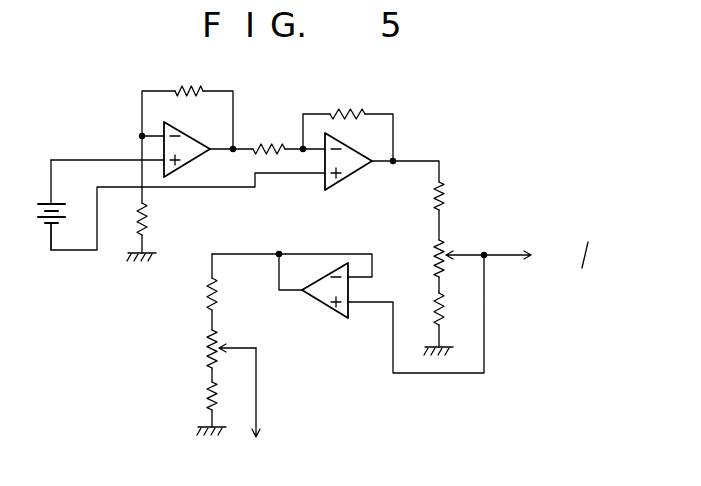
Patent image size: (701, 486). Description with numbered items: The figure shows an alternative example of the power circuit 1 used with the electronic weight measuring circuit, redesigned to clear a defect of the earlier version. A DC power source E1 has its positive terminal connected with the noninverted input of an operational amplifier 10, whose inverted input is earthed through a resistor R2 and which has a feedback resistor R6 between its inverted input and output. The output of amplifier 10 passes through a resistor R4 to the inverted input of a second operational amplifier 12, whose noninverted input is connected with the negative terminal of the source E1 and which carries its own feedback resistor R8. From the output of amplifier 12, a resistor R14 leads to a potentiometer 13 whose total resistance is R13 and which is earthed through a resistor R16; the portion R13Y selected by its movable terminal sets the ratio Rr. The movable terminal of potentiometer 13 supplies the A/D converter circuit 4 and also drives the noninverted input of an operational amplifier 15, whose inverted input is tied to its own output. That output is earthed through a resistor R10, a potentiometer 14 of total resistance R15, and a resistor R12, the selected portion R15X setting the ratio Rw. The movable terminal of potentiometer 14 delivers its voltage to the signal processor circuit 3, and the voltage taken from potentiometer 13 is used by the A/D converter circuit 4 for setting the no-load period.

The power circuit 1 is at (402, 151).
The operational amplifier 10 is at (193, 163).
The operational amplifier 12 is at (352, 176).
The potentiometer 13 is at (448, 250).
The potentiometer 14 is at (206, 347).
The operational amplifier 15 is at (330, 302).
The signal processor circuit 3 is at (284, 405).
The A/D converter circuit 4 is at (545, 266).
The DC power source E1 is at (40, 209).
The resistor R2 is at (147, 222).
The resistor R4 is at (281, 150).
The resistor R6 is at (203, 86).
The resistor R8 is at (350, 110).
The resistor R10 is at (208, 293).
The resistor R12 is at (207, 398).
The potentiometer resistance R13 is at (437, 262).
The resistor R14 is at (443, 196).
The potentiometer resistance R15 is at (199, 366).
The resistor R16 is at (443, 314).